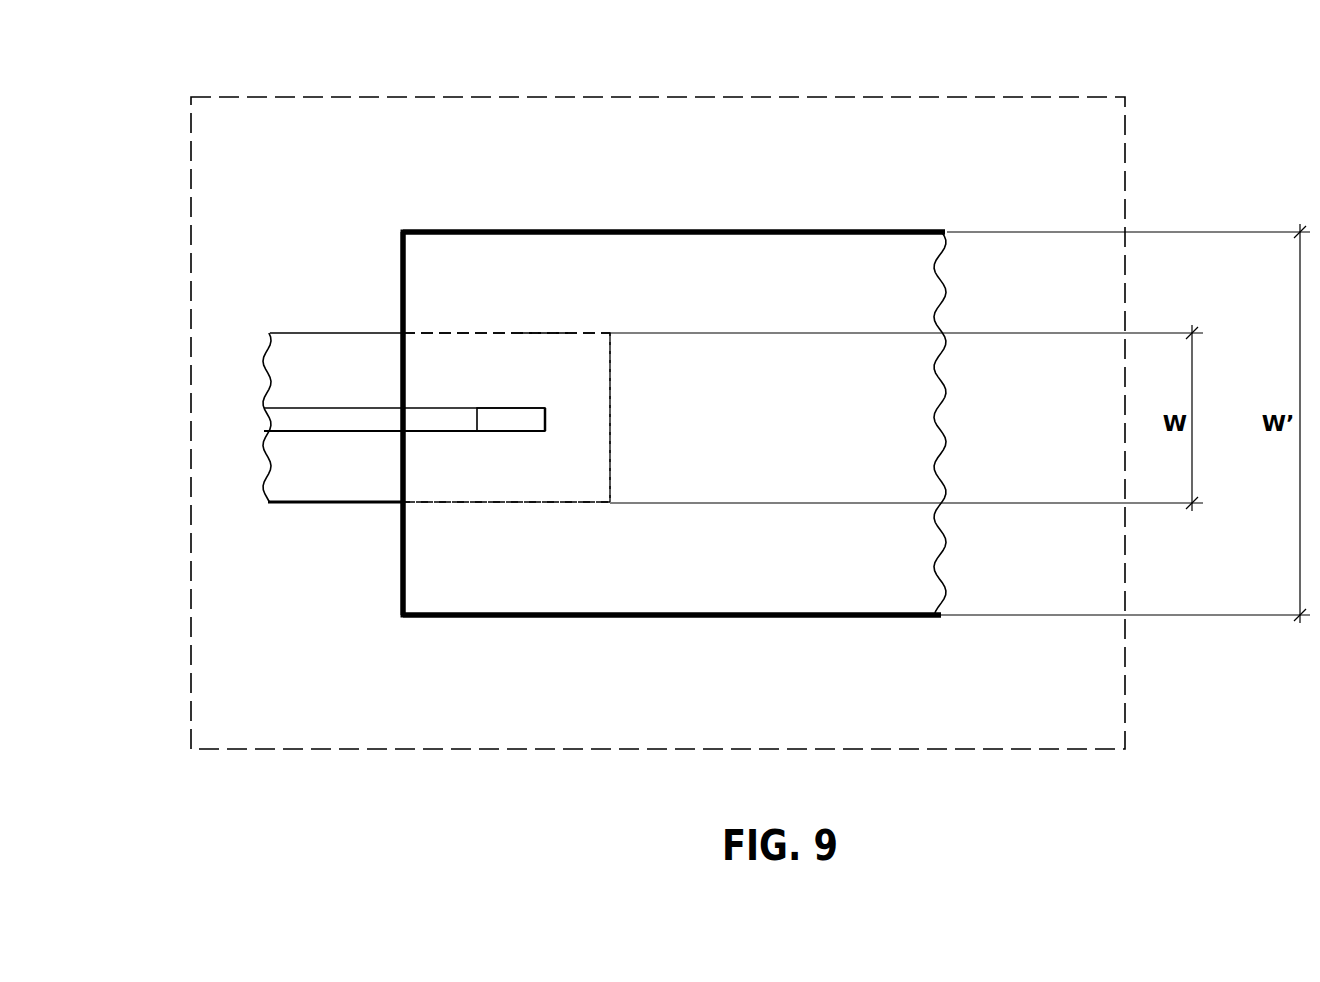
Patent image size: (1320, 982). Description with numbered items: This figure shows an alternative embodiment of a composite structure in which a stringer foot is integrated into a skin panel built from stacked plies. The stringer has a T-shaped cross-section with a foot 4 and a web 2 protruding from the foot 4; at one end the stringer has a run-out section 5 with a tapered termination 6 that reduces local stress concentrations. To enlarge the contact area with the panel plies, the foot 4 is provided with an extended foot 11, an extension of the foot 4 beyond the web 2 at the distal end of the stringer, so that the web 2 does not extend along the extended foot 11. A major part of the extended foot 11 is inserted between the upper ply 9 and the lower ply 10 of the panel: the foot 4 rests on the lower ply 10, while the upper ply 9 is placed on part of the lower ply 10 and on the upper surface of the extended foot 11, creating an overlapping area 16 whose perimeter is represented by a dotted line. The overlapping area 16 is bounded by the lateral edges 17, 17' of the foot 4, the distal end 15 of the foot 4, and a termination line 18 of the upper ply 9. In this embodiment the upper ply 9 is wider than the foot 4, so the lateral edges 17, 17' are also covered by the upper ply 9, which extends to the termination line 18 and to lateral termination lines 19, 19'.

The web 2 is at (333, 415).
The foot 4 is at (320, 480).
The run-out section 5 is at (545, 408).
The tapered termination 6 is at (517, 422).
The upper ply 9 is at (819, 283).
The lower ply 10 is at (985, 152).
The extended foot 11 is at (545, 334).
The distal end 15 is at (610, 465).
The overlapping area 16 is at (462, 352).
The lateral edge 17 is at (506, 181).
The lateral edge 17' is at (492, 655).
The termination line 18 is at (397, 547).
The lateral termination line 19 is at (674, 130).
The lateral termination line 19' is at (672, 711).